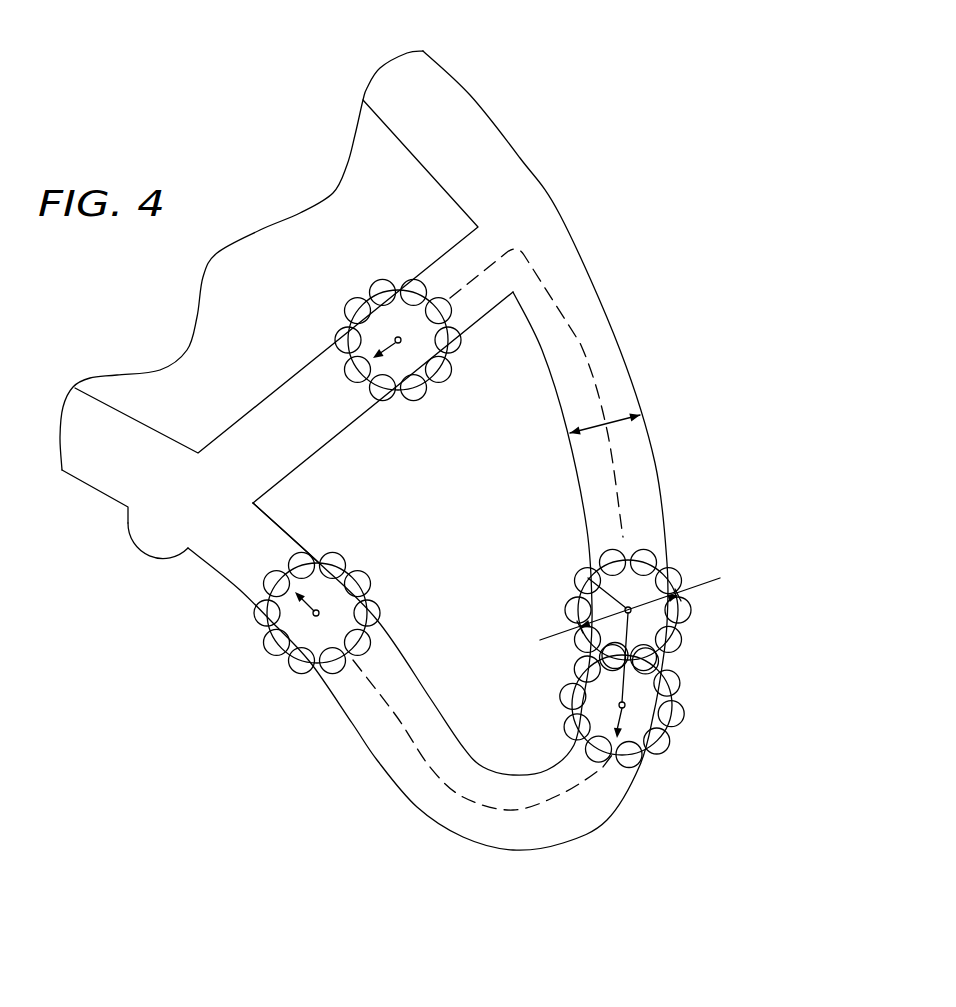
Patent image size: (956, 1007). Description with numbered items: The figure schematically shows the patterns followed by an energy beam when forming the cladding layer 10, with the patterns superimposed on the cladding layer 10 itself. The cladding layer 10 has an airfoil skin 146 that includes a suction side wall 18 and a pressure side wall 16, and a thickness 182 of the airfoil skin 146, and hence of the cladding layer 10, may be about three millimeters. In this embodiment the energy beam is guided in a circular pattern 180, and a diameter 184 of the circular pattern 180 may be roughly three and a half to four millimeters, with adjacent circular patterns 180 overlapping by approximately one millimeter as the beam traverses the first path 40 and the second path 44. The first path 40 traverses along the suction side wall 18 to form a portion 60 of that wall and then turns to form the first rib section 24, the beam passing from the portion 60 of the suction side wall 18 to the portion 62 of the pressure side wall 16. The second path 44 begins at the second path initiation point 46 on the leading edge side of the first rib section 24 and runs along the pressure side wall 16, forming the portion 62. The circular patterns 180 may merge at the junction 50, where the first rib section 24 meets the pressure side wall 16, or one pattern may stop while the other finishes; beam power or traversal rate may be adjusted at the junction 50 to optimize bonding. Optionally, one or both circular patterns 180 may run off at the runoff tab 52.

The cladding layer 10 is at (489, 450).
The suction side wall 18 is at (489, 450).
The portion of the suction side wall 60 is at (655, 463).
The airfoil skin 146 is at (564, 212).
The first path 40 is at (580, 343).
The thickness 182 is at (597, 427).
The first rib section 24 is at (293, 376).
The junction 50 is at (210, 518).
The runoff tab 52 is at (140, 545).
The pressure side wall 16 is at (304, 629).
The portion of the pressure side wall 62 is at (350, 722).
The circular pattern 180 is at (607, 553).
The second path initiation point 46 is at (588, 578).
The diameter 184 is at (703, 583).
The second path 44 is at (627, 688).